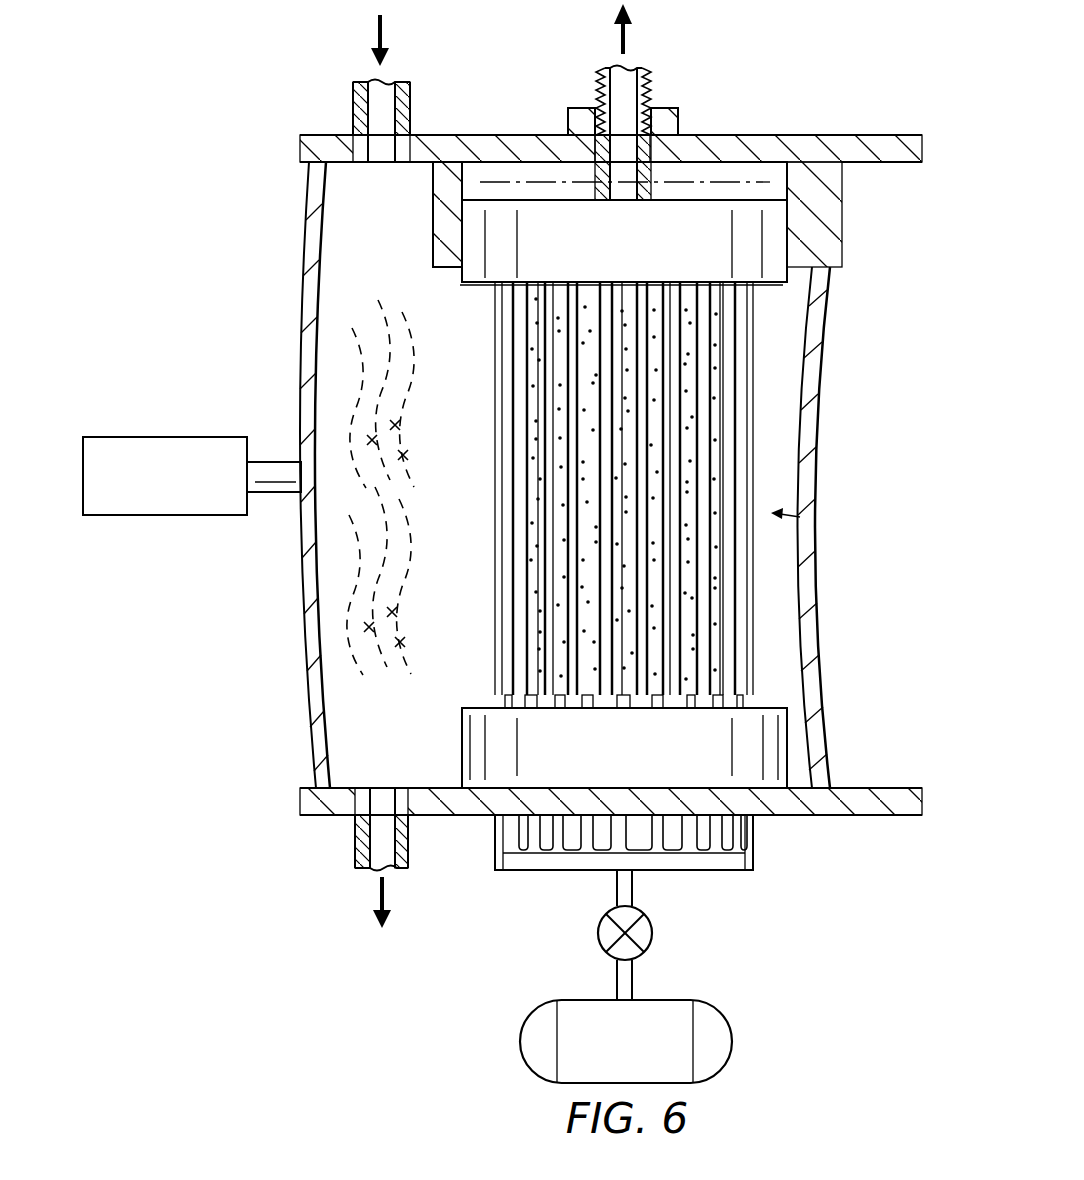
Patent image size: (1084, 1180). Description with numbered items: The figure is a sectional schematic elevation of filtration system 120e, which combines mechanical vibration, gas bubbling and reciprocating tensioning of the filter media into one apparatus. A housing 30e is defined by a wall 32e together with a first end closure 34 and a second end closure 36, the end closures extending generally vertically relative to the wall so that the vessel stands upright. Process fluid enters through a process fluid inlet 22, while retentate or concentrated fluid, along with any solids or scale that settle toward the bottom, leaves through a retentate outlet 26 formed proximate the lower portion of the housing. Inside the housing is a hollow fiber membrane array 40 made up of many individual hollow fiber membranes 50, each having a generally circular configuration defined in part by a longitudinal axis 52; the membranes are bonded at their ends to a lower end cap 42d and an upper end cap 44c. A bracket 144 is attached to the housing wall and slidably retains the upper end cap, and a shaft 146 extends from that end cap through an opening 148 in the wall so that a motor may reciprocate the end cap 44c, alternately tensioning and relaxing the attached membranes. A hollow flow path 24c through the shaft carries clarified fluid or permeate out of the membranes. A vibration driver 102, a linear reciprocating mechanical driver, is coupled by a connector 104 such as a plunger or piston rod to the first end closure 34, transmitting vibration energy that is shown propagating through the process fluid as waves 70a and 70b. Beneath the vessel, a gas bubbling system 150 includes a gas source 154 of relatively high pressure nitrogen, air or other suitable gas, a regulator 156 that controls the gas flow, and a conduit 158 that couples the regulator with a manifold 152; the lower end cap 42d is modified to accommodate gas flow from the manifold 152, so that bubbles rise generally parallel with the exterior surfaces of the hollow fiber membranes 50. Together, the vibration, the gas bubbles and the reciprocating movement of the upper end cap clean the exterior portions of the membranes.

The process fluid inlet 22 is at (353, 122).
The hollow flow path 24c is at (627, 70).
The retentate outlet 26 is at (355, 840).
The housing 30e is at (294, 325).
The wall 32e is at (822, 135).
The first end closure 34 is at (302, 623).
The second end closure 36 is at (824, 390).
The hollow fiber membrane array 40 is at (798, 520).
The end cap 42d is at (462, 750).
The end cap 44c is at (478, 288).
The hollow fiber membrane 50 is at (643, 325).
The longitudinal axis 52 is at (692, 666).
The vibration waves 70a is at (397, 305).
The vibration waves 70b is at (434, 568).
The vibration driver 102 is at (162, 517).
The connector 104 is at (277, 494).
The filtration system 120e is at (228, 752).
The bracket 144 is at (433, 215).
The shaft 146 is at (660, 200).
The opening 148 is at (591, 160).
The gas bubbling system 150 is at (780, 983).
The manifold 152 is at (703, 870).
The gas source 154 is at (520, 1040).
The regulator 156 is at (598, 930).
The conduit 158 is at (633, 980).